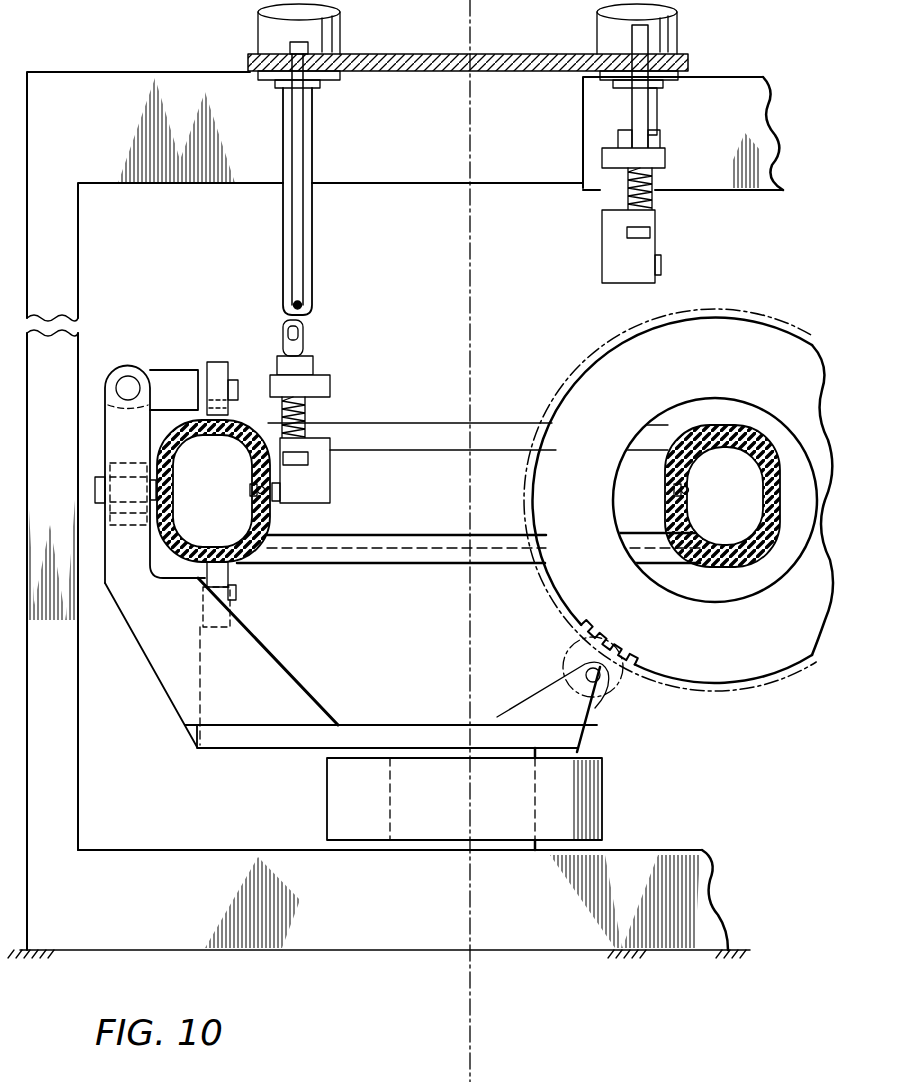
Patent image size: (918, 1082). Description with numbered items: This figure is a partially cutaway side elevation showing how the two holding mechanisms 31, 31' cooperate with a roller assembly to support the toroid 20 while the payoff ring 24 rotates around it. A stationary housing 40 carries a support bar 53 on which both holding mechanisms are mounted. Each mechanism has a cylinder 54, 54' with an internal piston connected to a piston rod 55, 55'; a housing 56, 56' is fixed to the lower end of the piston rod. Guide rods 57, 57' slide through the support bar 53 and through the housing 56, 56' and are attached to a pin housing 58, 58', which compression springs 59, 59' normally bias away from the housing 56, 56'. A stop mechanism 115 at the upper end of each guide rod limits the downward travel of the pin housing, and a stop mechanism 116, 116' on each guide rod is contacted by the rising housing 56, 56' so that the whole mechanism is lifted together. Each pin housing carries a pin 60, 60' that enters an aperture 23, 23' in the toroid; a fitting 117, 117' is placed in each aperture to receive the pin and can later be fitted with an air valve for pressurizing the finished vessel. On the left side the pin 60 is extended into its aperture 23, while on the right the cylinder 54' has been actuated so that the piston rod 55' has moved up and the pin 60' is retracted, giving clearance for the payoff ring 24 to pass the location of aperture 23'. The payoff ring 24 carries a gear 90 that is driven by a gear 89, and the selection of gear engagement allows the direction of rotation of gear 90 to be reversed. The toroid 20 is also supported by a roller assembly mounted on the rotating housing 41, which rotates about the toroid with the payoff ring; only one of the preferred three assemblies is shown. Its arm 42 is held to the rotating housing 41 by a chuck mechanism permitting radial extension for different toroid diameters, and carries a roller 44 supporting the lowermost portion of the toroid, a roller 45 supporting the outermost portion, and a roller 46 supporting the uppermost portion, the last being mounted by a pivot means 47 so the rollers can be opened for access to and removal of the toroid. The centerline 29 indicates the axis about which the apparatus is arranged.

The toroid 20 is at (530, 426).
The aperture 23 is at (213, 491).
The aperture 23' is at (701, 496).
The payoff ring 24 is at (583, 372).
The centerline 29 is at (472, 245).
The holding mechanism 31 is at (346, 272).
The holding mechanism 31' is at (585, 160).
The housing 40 is at (252, 848).
The rotating housing 41 is at (603, 768).
The arm 42 is at (165, 694).
The roller 44 is at (232, 580).
The roller 45 is at (95, 485).
The roller 46 is at (228, 365).
The pivot means 47 is at (133, 376).
The bar 53 is at (552, 56).
The cylinder 54 is at (322, 46).
The cylinder 54' is at (666, 46).
The piston rod 55 is at (324, 181).
The piston rod 55' is at (617, 87).
The housing 56 is at (322, 385).
The housing 56' is at (656, 160).
The guide rod 57 is at (318, 201).
The guide rod 57' is at (676, 111).
The pin housing 58 is at (327, 470).
The pin housing 58' is at (653, 246).
The compression spring 59 is at (328, 417).
The compression spring 59' is at (690, 195).
The pin 60 is at (294, 506).
The pin 60' is at (684, 261).
The gear 89 is at (560, 660).
The gear 90 is at (672, 684).
The stop mechanism 115 is at (292, 46).
The stop mechanism 116 is at (317, 347).
The stop mechanism 116' is at (667, 137).
The fitting 117 is at (232, 503).
The fitting 117' is at (654, 506).